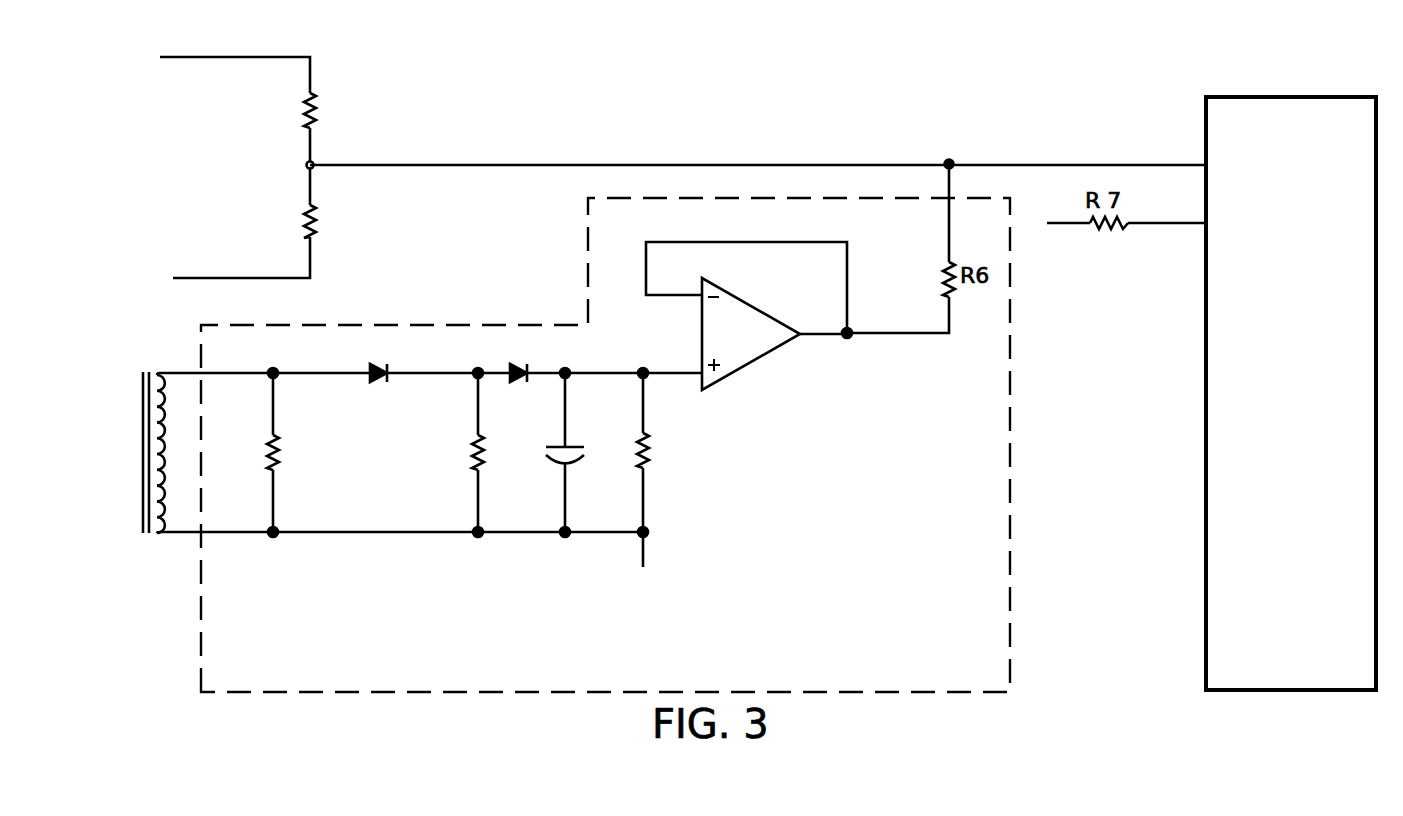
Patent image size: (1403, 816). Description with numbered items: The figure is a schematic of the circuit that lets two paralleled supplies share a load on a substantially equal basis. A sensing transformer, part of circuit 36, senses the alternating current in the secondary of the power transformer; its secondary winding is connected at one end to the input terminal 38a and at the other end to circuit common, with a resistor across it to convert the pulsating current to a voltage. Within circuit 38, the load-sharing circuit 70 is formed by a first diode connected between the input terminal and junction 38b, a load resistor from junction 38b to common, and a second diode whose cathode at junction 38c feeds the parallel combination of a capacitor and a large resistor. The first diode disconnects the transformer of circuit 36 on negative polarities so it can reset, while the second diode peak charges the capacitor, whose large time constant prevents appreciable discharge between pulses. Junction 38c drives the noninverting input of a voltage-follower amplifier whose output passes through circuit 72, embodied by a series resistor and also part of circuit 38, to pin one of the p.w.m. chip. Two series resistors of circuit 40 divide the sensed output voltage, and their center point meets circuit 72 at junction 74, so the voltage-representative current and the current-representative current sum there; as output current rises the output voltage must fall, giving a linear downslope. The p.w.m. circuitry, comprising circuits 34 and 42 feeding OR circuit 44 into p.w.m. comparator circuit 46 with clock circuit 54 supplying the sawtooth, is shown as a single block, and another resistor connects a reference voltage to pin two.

The circuit 34 is at (1283, 374).
The circuit 42 is at (1283, 374).
The OR circuit 44 is at (1283, 374).
The p.w.m. comparator circuit 46 is at (1283, 374).
The clock circuit 54 is at (1222, 96).
The circuit 36 is at (110, 362).
The circuit 38 is at (537, 316).
The input terminal 38a is at (273, 368).
The junction 38b is at (477, 370).
The junction 38c is at (567, 370).
The circuit 40 is at (262, 180).
The circuit 70 is at (638, 332).
The circuit 72 is at (922, 246).
The junction 74 is at (951, 160).